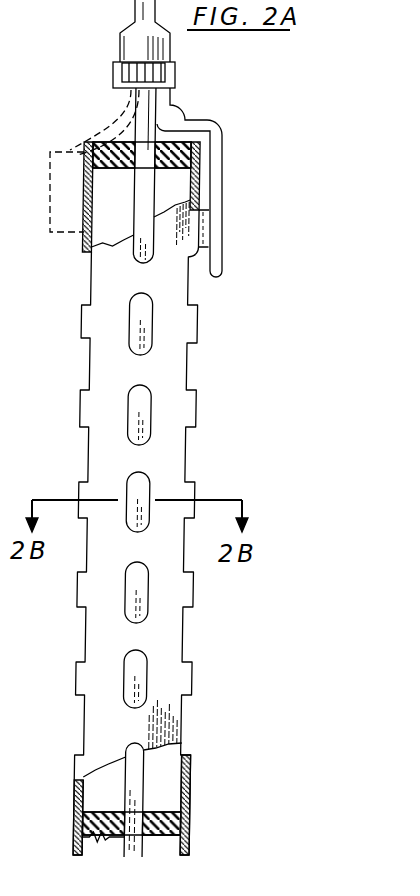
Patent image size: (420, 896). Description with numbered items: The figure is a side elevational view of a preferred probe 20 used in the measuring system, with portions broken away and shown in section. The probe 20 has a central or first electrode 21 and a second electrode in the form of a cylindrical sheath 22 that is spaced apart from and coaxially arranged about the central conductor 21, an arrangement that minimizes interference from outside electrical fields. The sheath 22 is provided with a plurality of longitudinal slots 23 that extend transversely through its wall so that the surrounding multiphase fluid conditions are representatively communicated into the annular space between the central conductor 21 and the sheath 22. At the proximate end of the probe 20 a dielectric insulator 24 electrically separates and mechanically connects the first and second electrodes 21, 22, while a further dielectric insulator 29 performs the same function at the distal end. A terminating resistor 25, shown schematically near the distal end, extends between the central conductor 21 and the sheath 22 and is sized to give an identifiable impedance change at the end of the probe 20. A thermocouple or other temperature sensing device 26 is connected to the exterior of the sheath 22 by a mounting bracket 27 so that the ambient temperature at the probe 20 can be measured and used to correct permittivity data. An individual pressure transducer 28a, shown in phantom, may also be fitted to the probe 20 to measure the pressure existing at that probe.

The probe 20 is at (238, 265).
The central electrode 21 is at (148, 124).
The cylindrical sheath 22 is at (187, 797).
The longitudinal slots 23 is at (140, 388).
The dielectric insulator 24 is at (128, 153).
The terminating resistor 25 is at (100, 840).
The thermocouple 26 is at (222, 182).
The bracket 27 is at (206, 222).
The pressure transducer 28a is at (68, 150).
The dielectric insulator 29 is at (165, 837).